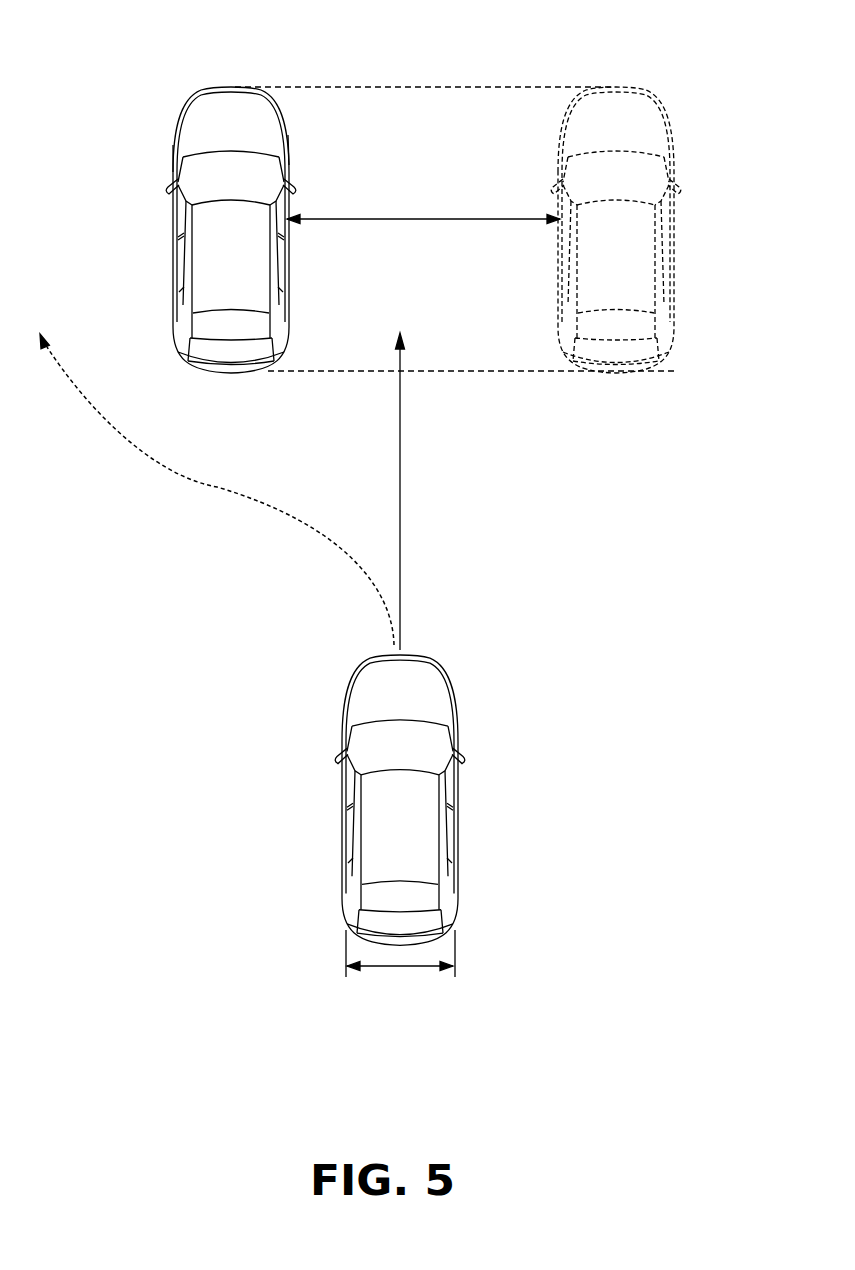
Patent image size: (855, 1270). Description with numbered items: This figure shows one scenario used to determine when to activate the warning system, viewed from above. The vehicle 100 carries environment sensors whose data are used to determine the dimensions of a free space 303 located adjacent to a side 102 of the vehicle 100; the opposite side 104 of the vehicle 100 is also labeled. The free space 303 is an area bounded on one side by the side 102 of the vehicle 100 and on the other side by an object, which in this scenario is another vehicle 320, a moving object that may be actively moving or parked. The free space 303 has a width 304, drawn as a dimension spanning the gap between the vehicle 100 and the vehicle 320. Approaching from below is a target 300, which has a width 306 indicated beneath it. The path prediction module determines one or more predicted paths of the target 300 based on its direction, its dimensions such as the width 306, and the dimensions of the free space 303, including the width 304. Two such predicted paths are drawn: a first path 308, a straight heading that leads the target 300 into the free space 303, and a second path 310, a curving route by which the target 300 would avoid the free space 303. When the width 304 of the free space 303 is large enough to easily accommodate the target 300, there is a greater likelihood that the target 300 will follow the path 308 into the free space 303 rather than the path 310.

The vehicle 100 is at (228, 87).
The side of the vehicle 102 is at (288, 148).
The vehicle side 104 is at (174, 162).
The target 300 is at (345, 849).
The free space 303 is at (510, 158).
The width of the free space 304 is at (428, 218).
The width of the target 306 is at (396, 968).
The first path 308 is at (400, 482).
The second path 310 is at (217, 486).
The vehicle 320 is at (614, 90).